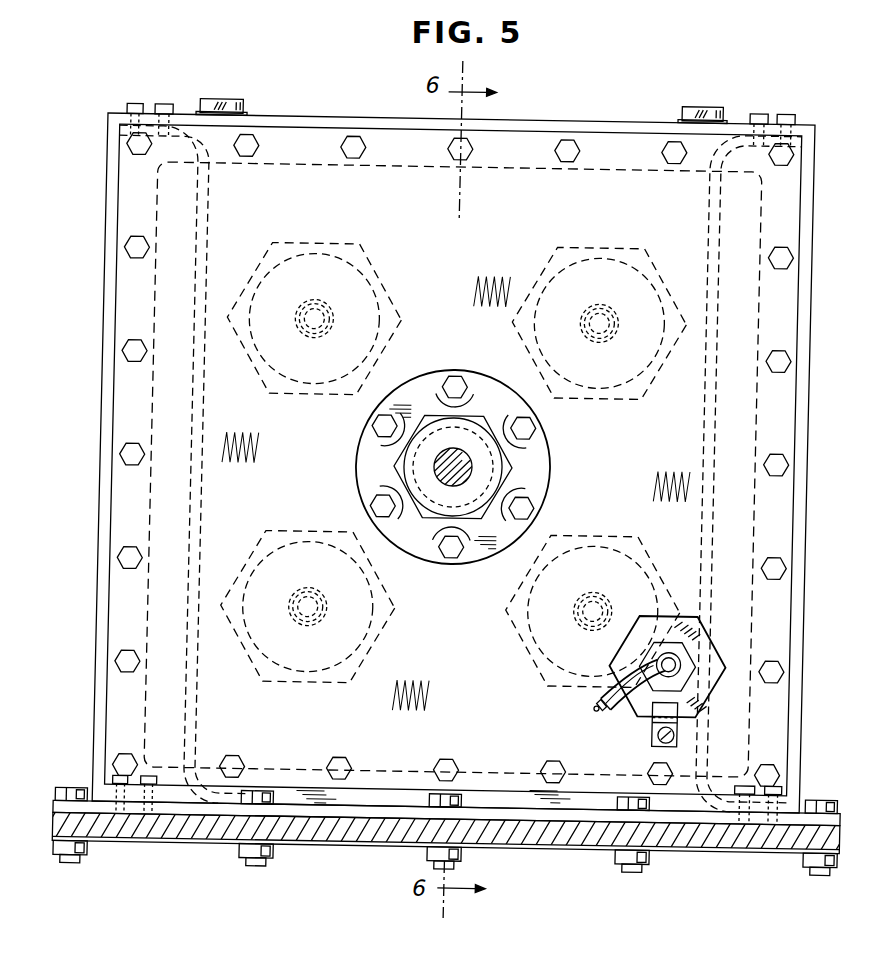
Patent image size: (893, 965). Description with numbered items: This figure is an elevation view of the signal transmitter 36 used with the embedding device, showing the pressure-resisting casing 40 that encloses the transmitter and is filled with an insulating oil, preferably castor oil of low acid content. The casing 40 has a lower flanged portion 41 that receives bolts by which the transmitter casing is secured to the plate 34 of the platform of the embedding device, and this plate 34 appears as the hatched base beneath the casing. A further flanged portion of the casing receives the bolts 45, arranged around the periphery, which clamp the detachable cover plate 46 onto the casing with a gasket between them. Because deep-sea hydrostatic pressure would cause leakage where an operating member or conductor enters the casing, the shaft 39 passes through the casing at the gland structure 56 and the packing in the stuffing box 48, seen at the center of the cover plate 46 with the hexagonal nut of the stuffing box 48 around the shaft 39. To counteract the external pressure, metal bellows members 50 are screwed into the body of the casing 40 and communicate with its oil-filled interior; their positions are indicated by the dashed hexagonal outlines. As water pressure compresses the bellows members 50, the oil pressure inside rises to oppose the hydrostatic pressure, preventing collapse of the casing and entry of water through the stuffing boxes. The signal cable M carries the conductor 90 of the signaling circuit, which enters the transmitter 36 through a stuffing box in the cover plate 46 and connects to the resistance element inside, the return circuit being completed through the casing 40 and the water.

The plate 34 is at (593, 814).
The transmitter 36 is at (590, 116).
The shaft 39 is at (480, 467).
The casing 40 is at (358, 122).
The lower flanged portion 41 is at (362, 804).
The bolts 45 is at (248, 152).
The cover plate 46 is at (293, 147).
The stuffing box 48 is at (505, 448).
The metal bellows members 50 is at (355, 258).
The gland structure 56 is at (410, 463).
The conductor 90 is at (605, 704).
The signal cable M is at (633, 698).